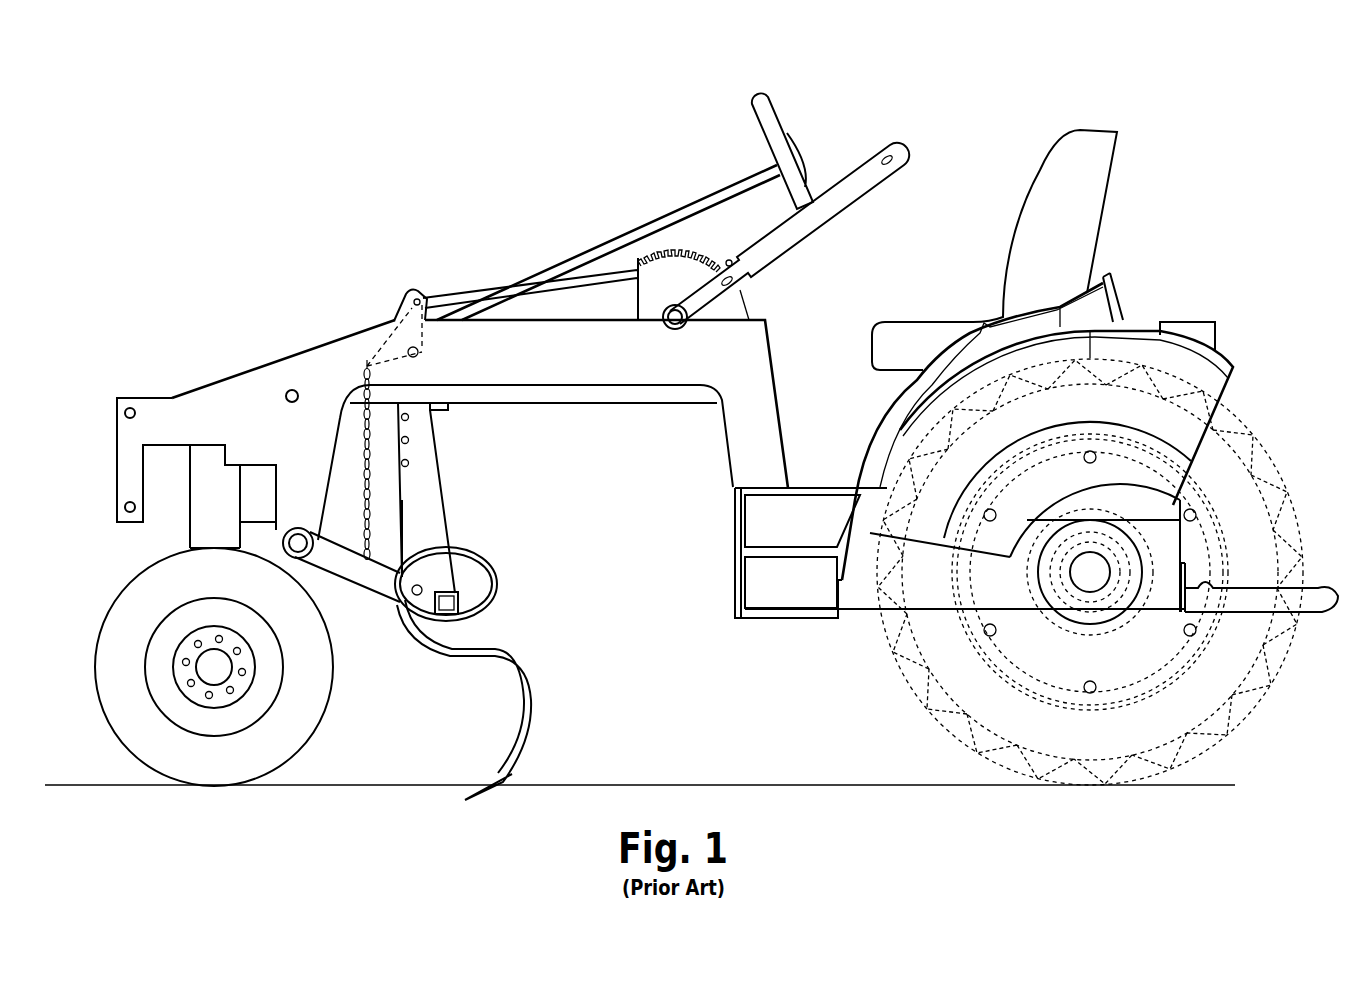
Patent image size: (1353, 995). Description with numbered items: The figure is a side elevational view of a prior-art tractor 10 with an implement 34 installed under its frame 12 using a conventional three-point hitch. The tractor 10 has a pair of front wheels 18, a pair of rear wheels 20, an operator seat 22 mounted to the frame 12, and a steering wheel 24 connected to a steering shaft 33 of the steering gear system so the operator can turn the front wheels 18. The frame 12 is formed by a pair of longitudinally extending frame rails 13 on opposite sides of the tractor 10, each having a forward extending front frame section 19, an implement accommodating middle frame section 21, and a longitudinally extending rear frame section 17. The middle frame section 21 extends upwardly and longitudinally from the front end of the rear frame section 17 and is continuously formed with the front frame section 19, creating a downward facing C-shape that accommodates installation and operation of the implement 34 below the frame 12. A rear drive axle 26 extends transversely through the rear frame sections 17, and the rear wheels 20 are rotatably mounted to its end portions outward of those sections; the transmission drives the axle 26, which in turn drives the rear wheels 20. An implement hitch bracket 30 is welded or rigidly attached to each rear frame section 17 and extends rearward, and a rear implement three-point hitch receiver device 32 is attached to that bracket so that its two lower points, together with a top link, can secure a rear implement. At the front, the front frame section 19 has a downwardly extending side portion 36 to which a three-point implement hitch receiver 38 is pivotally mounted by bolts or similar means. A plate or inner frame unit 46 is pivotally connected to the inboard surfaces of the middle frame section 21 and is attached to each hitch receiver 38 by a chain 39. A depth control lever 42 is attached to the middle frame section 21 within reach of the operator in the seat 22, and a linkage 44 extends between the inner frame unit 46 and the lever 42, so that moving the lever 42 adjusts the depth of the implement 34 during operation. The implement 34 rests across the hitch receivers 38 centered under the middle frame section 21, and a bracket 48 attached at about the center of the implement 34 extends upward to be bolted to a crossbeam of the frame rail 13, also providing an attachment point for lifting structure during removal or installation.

The tractor 10 is at (1242, 234).
The frame 12 is at (354, 300).
The frame rails 13 is at (262, 362).
The rear frame section 17 is at (863, 595).
The front wheels 18 is at (309, 711).
The front frame section 19 is at (248, 407).
The rear wheels 20 is at (965, 686).
The implement accommodating middle frame section 21 is at (570, 352).
The operator seat 22 is at (1060, 245).
The steering wheel 24 is at (763, 126).
The rear drive axle 26 is at (1107, 556).
The implement hitch bracket 30 is at (1187, 558).
The rear implement three-point hitch receiver device 32 is at (1305, 612).
The steering shaft 33 is at (578, 255).
The implement 34 is at (490, 605).
The side portion 36 is at (300, 480).
The three-point implement hitch receiver 38 is at (346, 570).
The chain 39 is at (360, 430).
The depth control lever 42 is at (858, 186).
The linkage 44 is at (452, 297).
The inner frame unit 46 is at (398, 318).
The bracket 48 is at (420, 500).